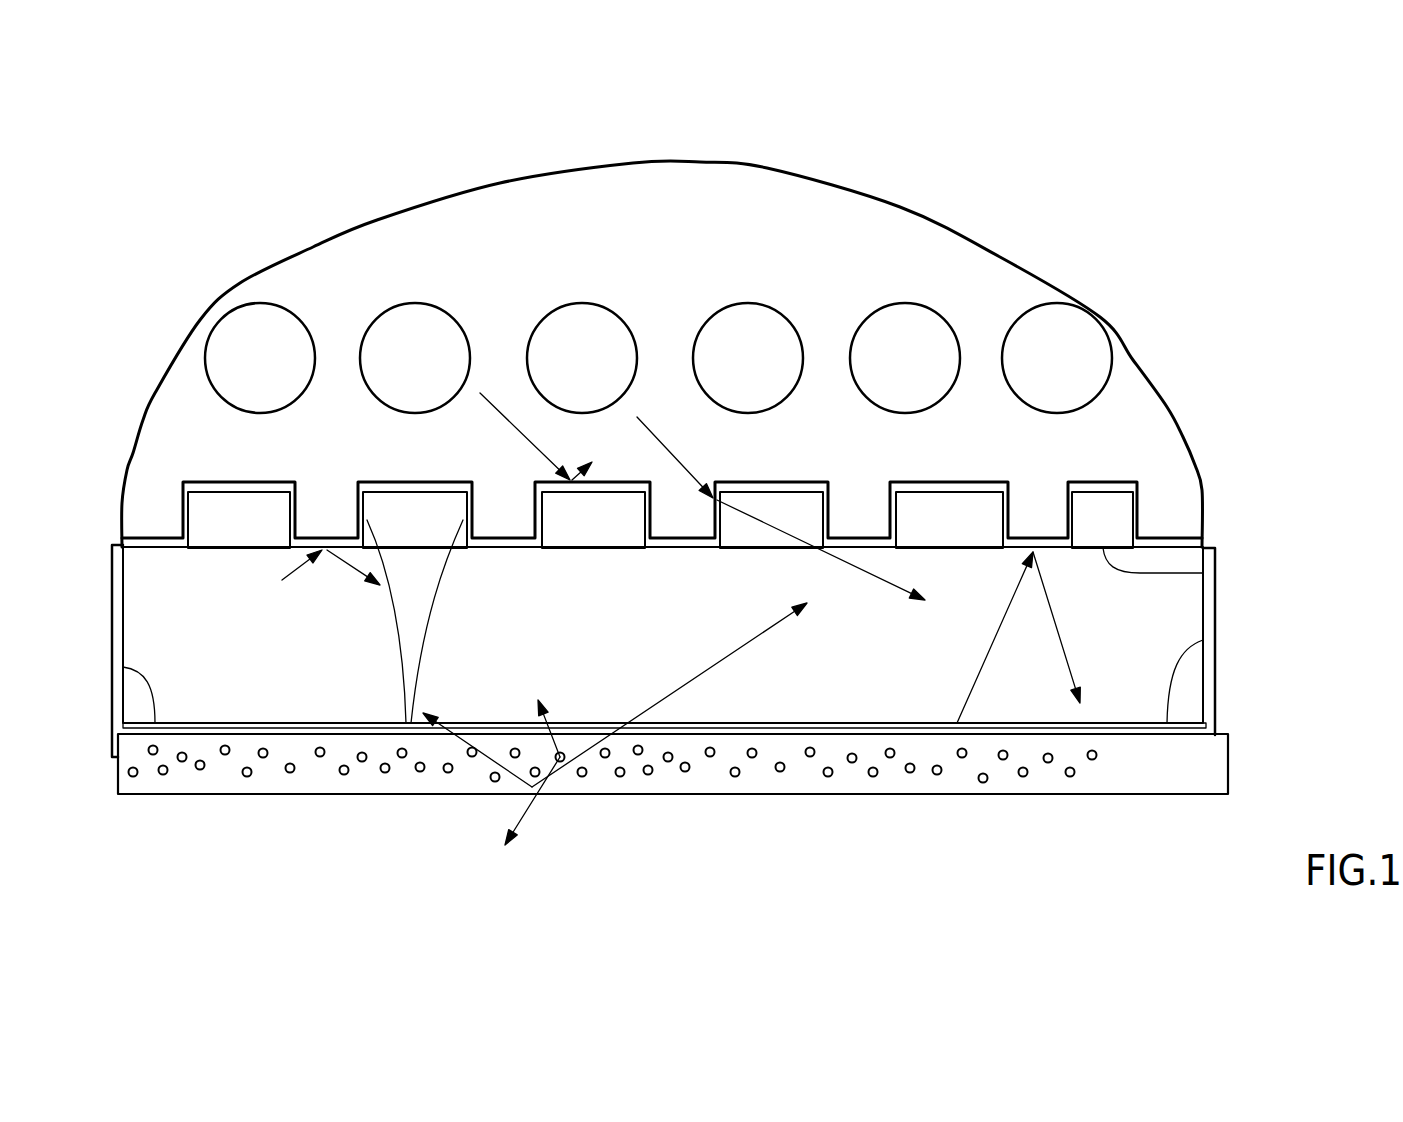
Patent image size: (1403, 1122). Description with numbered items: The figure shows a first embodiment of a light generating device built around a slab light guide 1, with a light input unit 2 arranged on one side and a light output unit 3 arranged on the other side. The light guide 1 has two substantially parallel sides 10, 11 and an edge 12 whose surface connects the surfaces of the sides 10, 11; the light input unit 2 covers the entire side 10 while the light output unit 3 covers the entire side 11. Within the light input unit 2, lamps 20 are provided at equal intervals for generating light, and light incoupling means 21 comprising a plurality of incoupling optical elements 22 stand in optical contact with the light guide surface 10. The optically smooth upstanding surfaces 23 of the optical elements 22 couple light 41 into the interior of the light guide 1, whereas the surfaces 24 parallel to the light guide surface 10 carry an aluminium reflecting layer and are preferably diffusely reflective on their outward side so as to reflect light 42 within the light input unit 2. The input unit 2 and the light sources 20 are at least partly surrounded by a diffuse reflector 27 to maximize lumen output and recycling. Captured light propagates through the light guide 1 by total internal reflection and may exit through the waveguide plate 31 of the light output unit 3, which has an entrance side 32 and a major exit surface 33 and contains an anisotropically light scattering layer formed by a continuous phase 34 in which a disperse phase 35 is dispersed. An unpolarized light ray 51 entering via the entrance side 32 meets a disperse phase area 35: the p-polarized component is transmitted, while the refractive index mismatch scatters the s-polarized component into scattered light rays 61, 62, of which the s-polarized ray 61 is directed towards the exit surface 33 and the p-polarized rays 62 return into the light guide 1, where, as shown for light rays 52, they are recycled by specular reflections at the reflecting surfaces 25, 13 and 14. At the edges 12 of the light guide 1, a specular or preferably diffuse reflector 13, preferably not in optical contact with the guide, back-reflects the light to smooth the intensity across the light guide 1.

The slab light guide 1 is at (1244, 641).
The light input unit 2 is at (1241, 429).
The light output unit 3 is at (1252, 761).
The light guide side 10 is at (1207, 567).
The light guide side 11 is at (1183, 723).
The edge 12 is at (155, 727).
The reflector 13 is at (1207, 603).
The reflecting surface 14 is at (928, 734).
The lamps 20 is at (748, 330).
The light incoupling means 21 is at (1164, 511).
The incoupling optical elements 22 is at (393, 503).
The upstanding surfaces 23 is at (408, 723).
The surfaces of the optical elements 24 is at (415, 487).
The reflecting surface 25 is at (340, 540).
The diffuse reflector 27 is at (940, 217).
The waveguide plate 31 is at (1047, 778).
The entrance side 32 is at (1117, 735).
The exit surface 33 is at (1207, 793).
The continuous phase 34 is at (757, 785).
The disperse phase 35 is at (873, 777).
The light 41 is at (673, 452).
The light 42 is at (502, 408).
The light ray 51 is at (663, 698).
The light rays 52 is at (335, 558).
The scattered light ray 61 is at (527, 807).
The scattered light rays 62 is at (560, 746).